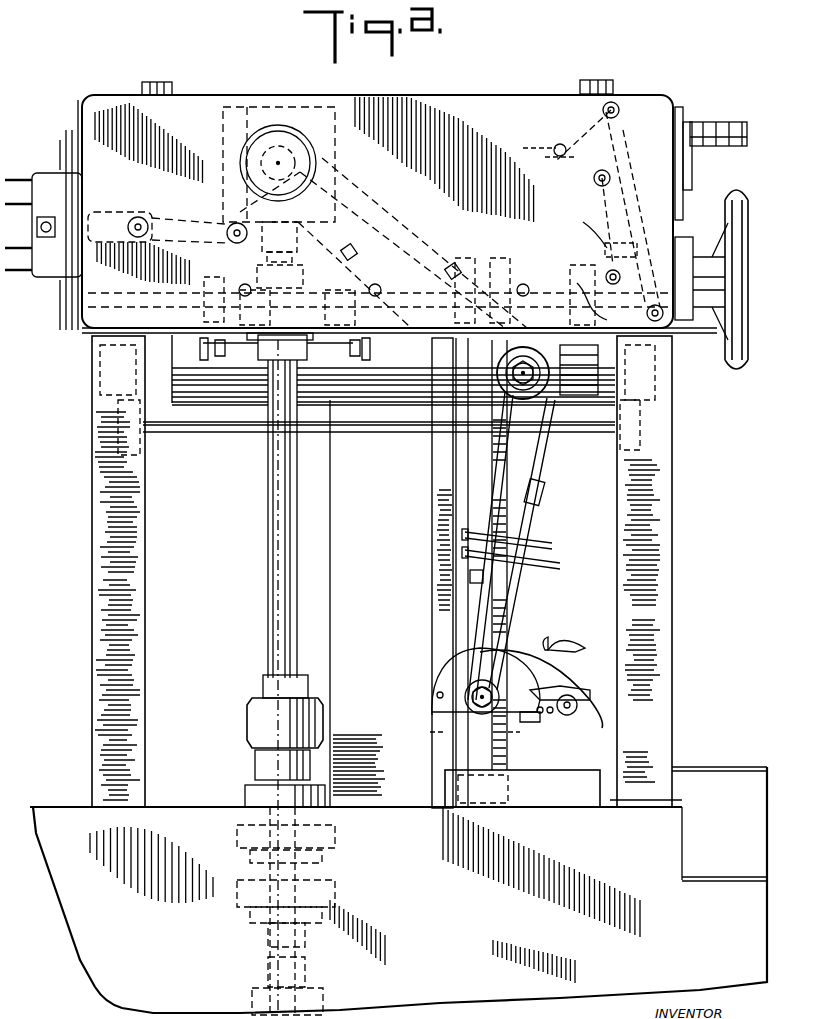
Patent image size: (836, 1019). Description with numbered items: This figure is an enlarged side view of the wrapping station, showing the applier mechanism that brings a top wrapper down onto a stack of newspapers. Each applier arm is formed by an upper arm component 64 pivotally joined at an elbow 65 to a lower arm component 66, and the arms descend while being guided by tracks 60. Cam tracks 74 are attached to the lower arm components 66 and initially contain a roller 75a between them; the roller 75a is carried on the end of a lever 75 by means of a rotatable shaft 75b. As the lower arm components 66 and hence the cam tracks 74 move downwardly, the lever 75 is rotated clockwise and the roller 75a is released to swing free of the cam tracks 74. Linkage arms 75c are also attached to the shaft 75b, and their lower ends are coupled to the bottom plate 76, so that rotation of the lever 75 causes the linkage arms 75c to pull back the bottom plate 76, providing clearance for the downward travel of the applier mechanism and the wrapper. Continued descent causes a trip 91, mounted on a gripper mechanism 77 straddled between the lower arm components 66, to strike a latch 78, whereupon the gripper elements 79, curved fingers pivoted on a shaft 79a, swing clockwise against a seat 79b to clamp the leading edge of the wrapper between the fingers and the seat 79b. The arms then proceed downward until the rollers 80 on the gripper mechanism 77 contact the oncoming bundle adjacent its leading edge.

The tracks 60 is at (440, 477).
The upper arm component 64 is at (395, 220).
The elbow 65 is at (545, 395).
The lower arm component 66 is at (540, 520).
The cam tracks 74 is at (520, 148).
The lever 75 is at (578, 130).
The roller 75a is at (594, 180).
The rotatable shaft 75b is at (622, 110).
The linkage arms 75c is at (630, 137).
The bottom plate 76 is at (581, 292).
The gripper mechanism 77 is at (435, 678).
The latch 78 is at (603, 220).
The gripper elements 79 is at (585, 696).
The shaft 79a is at (568, 717).
The seat 79b is at (540, 722).
The rollers 80 is at (455, 705).
The trip 91 is at (590, 645).